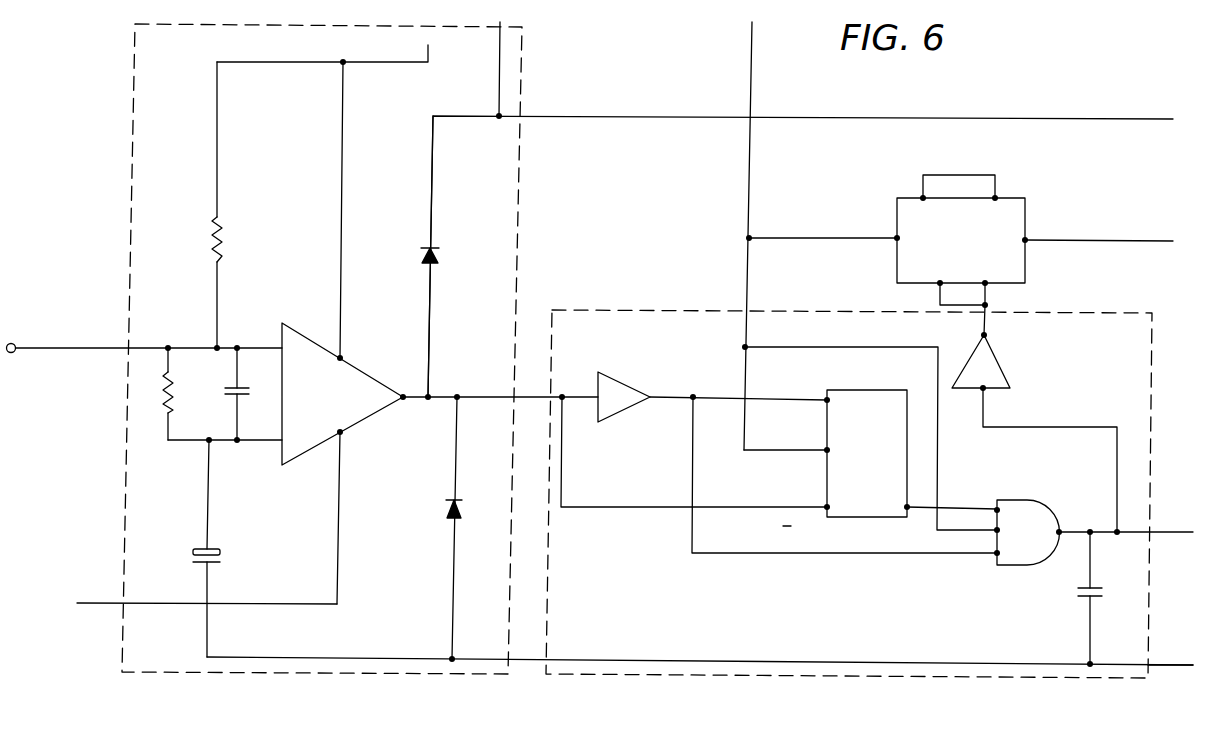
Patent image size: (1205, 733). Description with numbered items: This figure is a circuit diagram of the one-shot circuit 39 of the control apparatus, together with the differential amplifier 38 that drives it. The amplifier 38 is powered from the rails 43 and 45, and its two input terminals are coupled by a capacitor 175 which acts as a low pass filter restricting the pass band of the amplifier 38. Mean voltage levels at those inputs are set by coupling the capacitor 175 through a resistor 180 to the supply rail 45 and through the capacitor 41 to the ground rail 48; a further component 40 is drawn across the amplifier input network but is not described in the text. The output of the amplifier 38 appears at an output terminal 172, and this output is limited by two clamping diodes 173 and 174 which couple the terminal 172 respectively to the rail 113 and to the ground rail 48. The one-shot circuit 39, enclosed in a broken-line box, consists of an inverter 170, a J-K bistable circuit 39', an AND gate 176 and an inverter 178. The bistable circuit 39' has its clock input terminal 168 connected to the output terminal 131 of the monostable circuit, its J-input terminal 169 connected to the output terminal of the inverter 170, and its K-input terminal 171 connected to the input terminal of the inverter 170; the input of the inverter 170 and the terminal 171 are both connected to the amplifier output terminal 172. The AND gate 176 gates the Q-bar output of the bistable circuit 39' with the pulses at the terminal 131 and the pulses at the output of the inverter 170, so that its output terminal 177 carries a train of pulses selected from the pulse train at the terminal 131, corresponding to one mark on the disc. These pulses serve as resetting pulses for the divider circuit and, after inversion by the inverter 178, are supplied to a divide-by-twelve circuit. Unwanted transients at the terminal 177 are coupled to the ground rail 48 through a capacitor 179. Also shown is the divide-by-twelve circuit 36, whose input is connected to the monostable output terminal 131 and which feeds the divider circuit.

The supply rail 45 is at (412, 64).
The resistor 180 is at (222, 237).
The resistor 40 is at (175, 398).
The capacitor 175 is at (250, 395).
The differential amplifier 38 is at (336, 405).
The output terminal 172 is at (418, 395).
The clamping diode 173 is at (420, 255).
The clamping diode 174 is at (445, 511).
The capacitor 41 is at (218, 552).
The rail 43 is at (100, 607).
The output terminal 131 is at (753, 66).
The rail 113 is at (927, 118).
The divide-by-twelve circuit 36 is at (975, 252).
The one-shot circuit 39 is at (849, 475).
The inverter 170 is at (618, 388).
The J-input terminal 169 is at (792, 400).
The clock input terminal 168 is at (799, 450).
The K-input terminal 171 is at (799, 506).
The J-K bistable circuit 39' is at (868, 453).
The AND gate 176 is at (1038, 545).
The output terminal 177 is at (1073, 530).
The inverter 178 is at (999, 355).
The capacitor 179 is at (1078, 592).
The ground rail 48 is at (1157, 677).